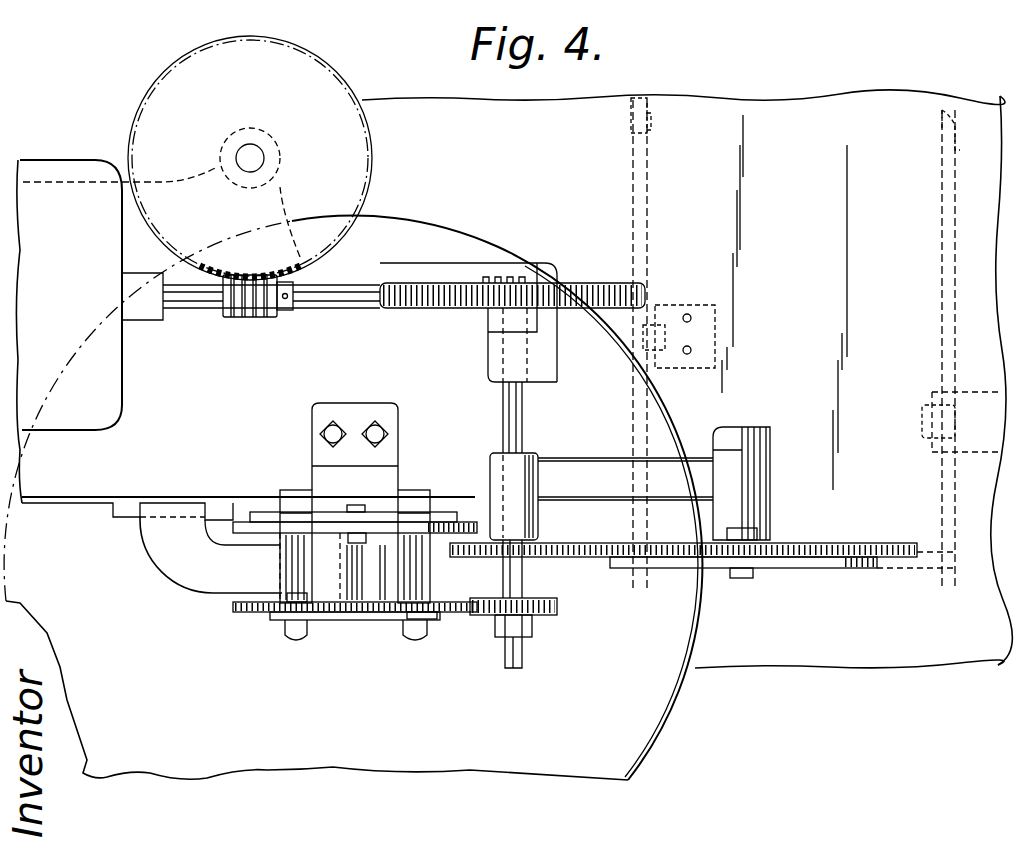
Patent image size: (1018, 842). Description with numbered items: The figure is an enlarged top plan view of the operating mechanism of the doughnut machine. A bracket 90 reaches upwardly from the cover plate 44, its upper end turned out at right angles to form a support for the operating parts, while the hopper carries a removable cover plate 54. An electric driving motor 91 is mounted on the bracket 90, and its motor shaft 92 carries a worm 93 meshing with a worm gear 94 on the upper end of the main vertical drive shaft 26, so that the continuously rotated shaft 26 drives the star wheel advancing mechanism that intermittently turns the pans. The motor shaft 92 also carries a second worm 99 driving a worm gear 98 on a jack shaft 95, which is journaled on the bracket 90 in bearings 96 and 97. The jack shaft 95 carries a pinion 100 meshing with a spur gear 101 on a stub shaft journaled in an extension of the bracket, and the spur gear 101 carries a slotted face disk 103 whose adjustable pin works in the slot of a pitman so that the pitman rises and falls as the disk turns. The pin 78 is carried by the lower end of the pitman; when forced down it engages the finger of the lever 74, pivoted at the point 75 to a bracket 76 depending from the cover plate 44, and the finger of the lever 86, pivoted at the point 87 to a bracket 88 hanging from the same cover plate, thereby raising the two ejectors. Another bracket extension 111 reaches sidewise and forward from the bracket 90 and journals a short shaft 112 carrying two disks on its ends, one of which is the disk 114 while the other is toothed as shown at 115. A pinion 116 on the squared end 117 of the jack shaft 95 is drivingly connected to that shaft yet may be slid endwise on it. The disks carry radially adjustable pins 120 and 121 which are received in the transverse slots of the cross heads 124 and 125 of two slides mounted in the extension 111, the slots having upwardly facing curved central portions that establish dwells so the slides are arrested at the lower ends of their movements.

The vertical drive shaft 26 is at (262, 150).
The cover plate 44 is at (810, 255).
The removable cover plate 54 is at (200, 721).
The lever 74 is at (633, 200).
The pivot 75 is at (666, 325).
The bracket 76 is at (657, 370).
The pin 78 is at (888, 568).
The lever 86 is at (945, 268).
The pivot point 87 is at (922, 426).
The bracket 88 is at (940, 455).
The bracket 90 is at (248, 471).
The electric driving motor 91 is at (158, 331).
The motor shaft 92 is at (211, 308).
The worm 93 is at (246, 317).
The worm gear 94 is at (291, 275).
The jack shaft 95 is at (508, 399).
The bearing 96 is at (490, 350).
The bearing 97 is at (491, 470).
The worm gear 98 is at (410, 308).
The worm 99 is at (500, 277).
The pinion 100 is at (547, 560).
The spur gear 101 is at (660, 548).
The face disk 103 is at (827, 568).
The bracket extension 111 is at (215, 585).
The short shaft 112 is at (335, 563).
The disk 114 is at (233, 531).
The teeth 115 is at (458, 615).
The pinion 116 is at (556, 604).
The squared end 117 is at (525, 660).
The pin 120 is at (300, 640).
The pin 121 is at (347, 507).
The cross head 124 is at (275, 622).
The cross head 125 is at (262, 512).